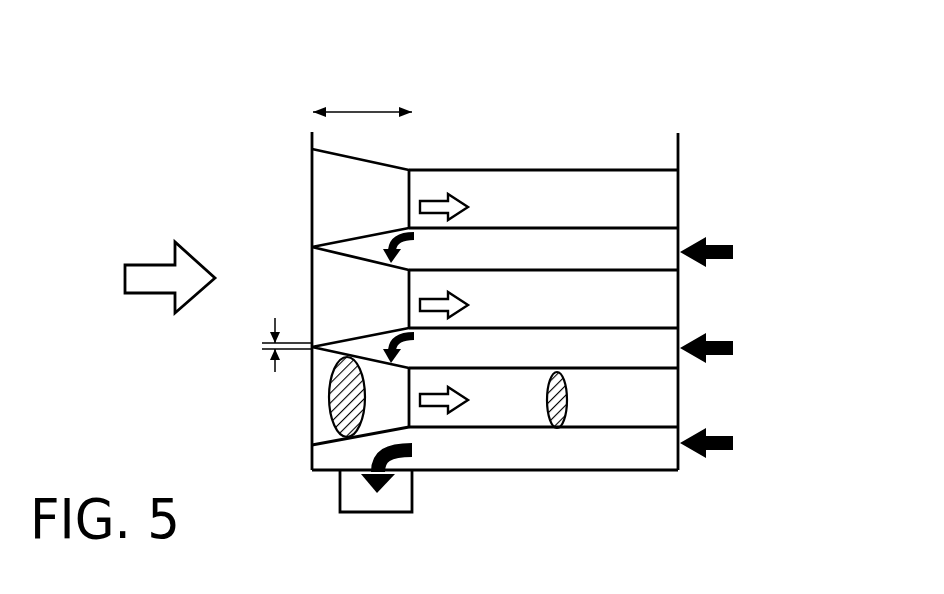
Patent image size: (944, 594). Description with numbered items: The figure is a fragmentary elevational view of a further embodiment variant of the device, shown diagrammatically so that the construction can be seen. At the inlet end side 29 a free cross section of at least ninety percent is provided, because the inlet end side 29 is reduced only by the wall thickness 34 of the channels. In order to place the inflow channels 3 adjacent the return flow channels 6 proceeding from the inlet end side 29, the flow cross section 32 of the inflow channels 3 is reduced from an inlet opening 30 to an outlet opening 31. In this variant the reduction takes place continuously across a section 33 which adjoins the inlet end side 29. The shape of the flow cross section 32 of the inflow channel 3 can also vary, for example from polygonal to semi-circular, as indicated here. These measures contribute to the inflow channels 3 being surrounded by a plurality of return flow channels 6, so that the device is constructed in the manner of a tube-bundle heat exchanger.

The inlet end side 29 is at (303, 126).
The inlet opening 30 is at (312, 188).
The outlet opening 31 is at (678, 187).
The inflow channels 3 is at (533, 193).
The return flow channels 6 is at (595, 255).
The section 33 is at (368, 112).
The wall thickness 34 is at (262, 343).
The flow cross section 32 is at (330, 400).